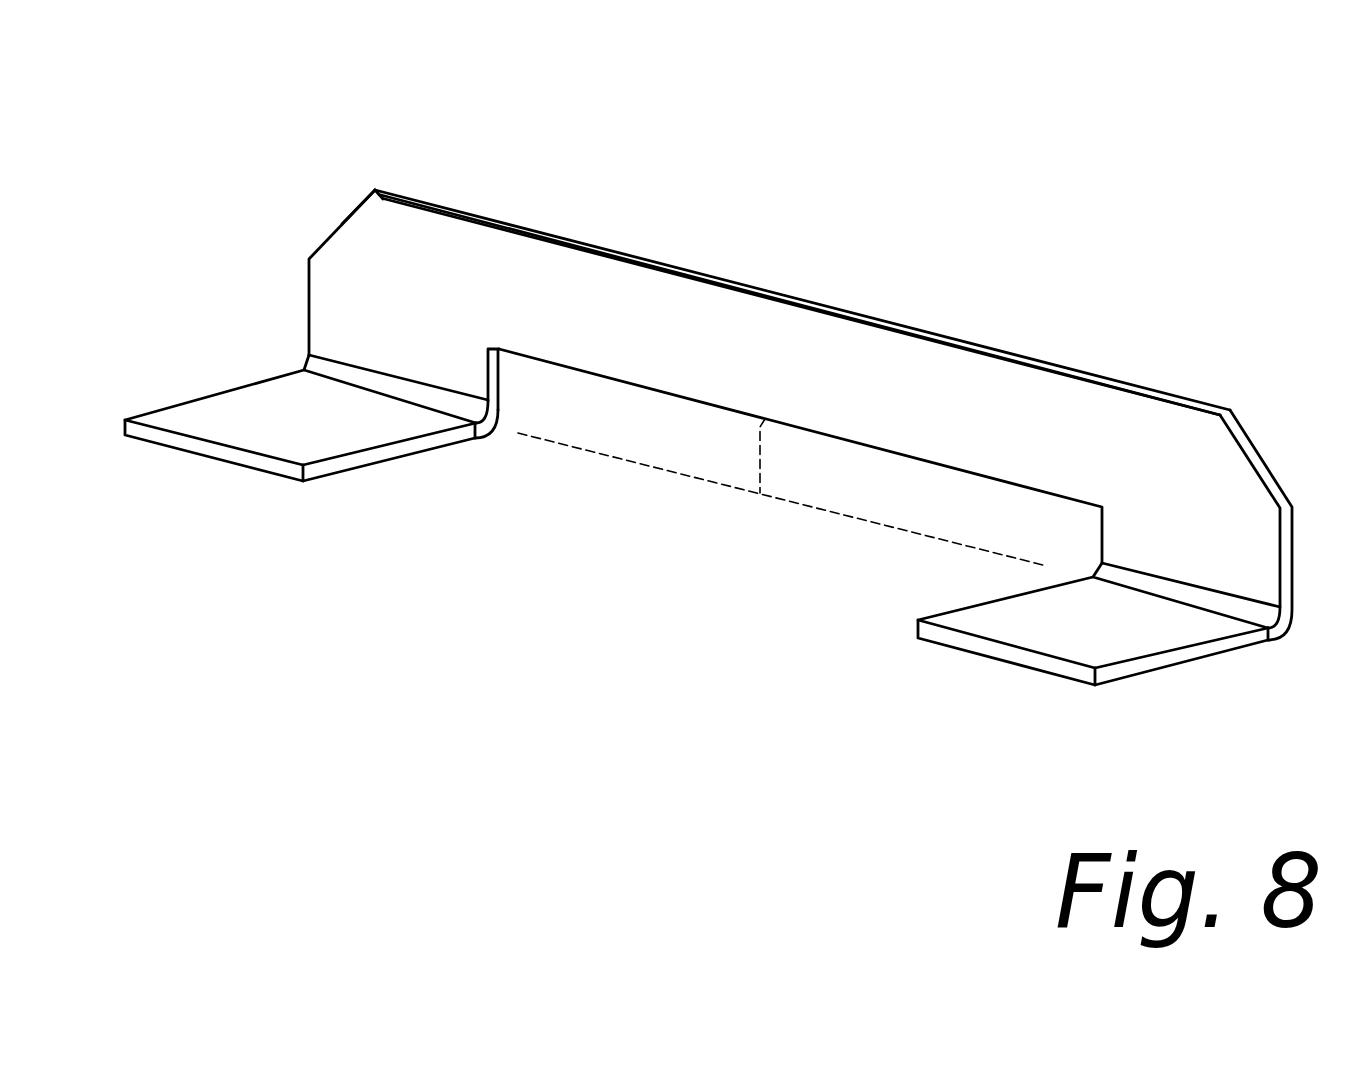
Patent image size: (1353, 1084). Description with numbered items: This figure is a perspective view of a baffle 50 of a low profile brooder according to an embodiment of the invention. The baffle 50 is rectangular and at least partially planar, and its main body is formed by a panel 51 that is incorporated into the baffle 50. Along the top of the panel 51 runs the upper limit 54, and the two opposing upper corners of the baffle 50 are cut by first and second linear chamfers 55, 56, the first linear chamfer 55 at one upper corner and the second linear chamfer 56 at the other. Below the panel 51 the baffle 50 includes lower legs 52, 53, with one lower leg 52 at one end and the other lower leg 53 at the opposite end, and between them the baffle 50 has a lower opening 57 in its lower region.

The baffle 50 is at (157, 97).
The panel 51 is at (722, 342).
The lower leg 52 is at (265, 408).
The lower leg 53 is at (1090, 632).
The upper limit 54 is at (587, 240).
The first linear chamfer 55 is at (342, 221).
The second linear chamfer 56 is at (1267, 468).
The lower opening 57 is at (758, 462).